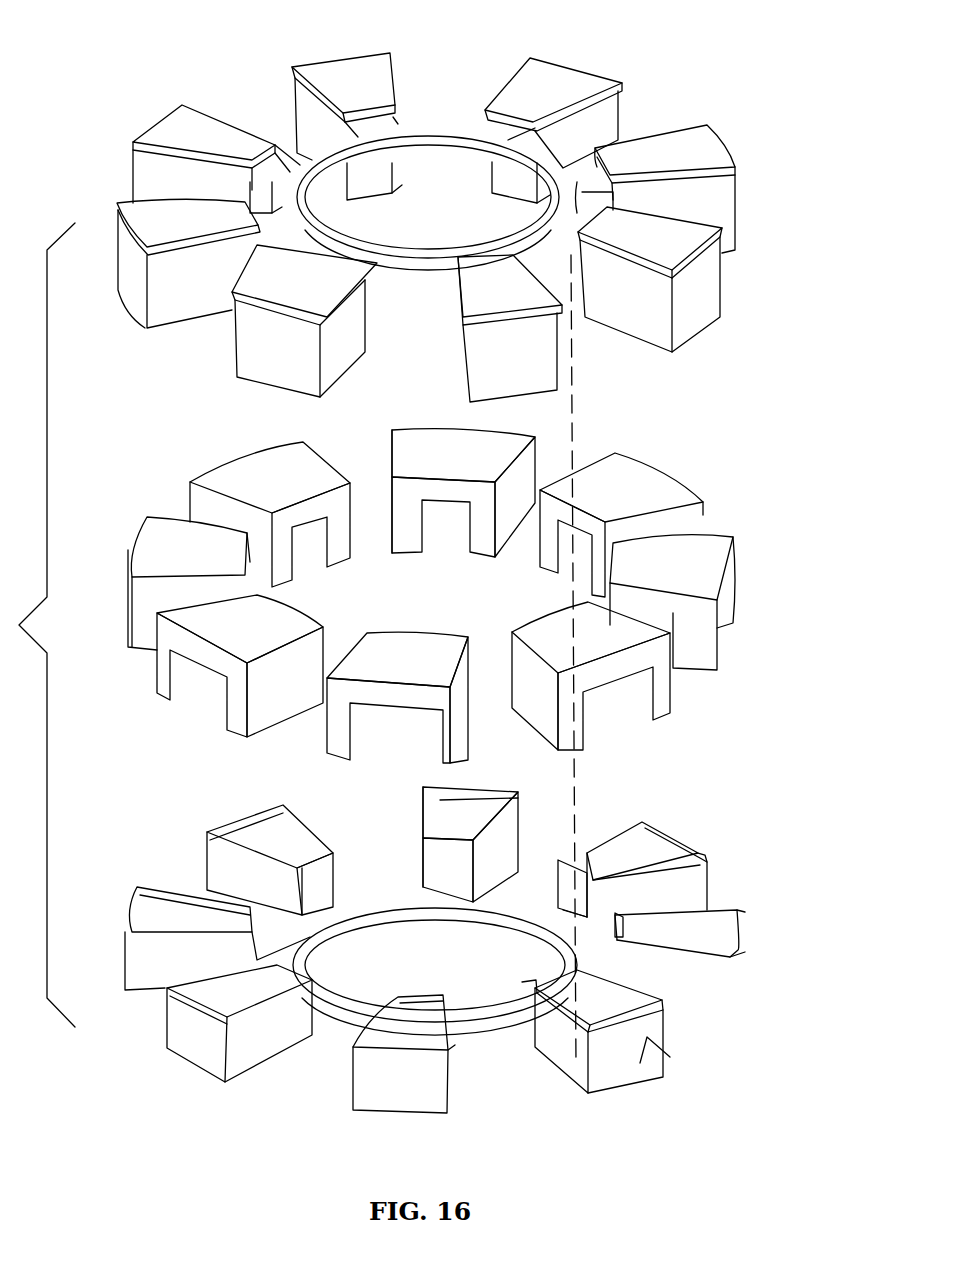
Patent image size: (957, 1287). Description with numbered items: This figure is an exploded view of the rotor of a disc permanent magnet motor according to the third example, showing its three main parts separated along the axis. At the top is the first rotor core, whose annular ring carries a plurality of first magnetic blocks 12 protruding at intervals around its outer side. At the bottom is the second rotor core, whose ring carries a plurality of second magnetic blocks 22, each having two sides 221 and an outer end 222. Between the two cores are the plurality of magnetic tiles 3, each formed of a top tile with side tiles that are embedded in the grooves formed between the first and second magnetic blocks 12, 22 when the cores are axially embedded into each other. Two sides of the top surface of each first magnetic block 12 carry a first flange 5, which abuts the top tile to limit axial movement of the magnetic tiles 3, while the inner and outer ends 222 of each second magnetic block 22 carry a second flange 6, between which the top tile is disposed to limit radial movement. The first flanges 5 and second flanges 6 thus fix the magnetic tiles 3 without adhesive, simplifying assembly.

The first magnetic block 12 is at (462, 227).
The first flange 5 is at (657, 263).
The magnetic tile 3 is at (635, 665).
The second magnetic block 22 is at (450, 969).
The side 221 is at (530, 993).
The outer end 222 is at (647, 1037).
The second flange 6 is at (579, 967).